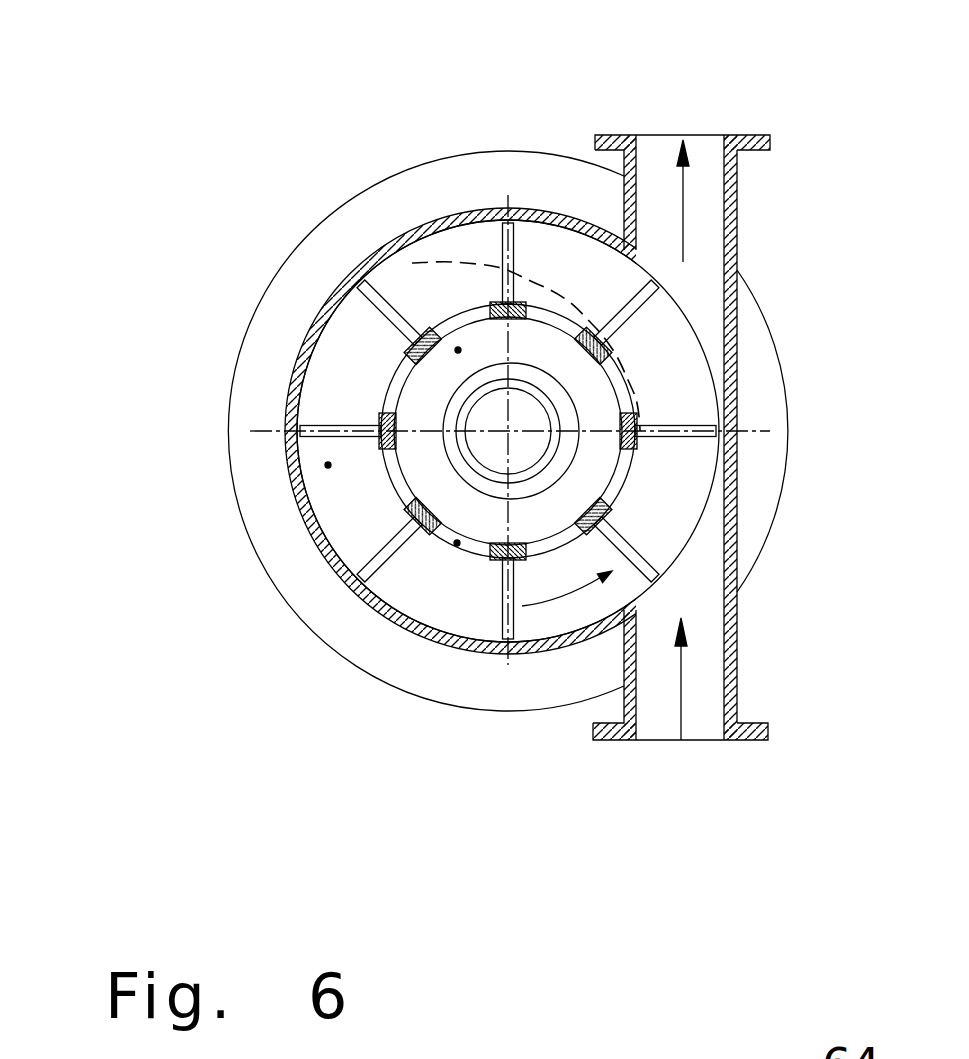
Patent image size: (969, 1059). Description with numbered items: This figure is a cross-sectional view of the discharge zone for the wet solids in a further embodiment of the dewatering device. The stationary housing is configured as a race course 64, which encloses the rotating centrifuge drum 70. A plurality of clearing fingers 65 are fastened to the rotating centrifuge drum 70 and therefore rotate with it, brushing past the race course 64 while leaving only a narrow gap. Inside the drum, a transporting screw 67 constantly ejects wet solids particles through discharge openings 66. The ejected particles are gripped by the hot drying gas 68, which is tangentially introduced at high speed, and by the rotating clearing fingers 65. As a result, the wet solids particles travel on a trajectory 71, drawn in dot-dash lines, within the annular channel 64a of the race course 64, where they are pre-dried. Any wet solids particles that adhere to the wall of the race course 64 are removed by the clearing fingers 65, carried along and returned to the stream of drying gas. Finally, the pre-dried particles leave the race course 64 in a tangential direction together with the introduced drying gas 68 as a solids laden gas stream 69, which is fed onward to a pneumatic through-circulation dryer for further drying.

The race course 64 is at (300, 513).
The annular channel 64a is at (327, 466).
The clearing fingers 65 is at (364, 574).
The discharge openings 66 is at (457, 543).
The transporting screw 67 is at (488, 382).
The hot drying gas 68 is at (680, 693).
The solids laden gas stream 69 is at (680, 174).
The rotating centrifuge drum 70 is at (442, 431).
The trajectory 71 is at (446, 255).